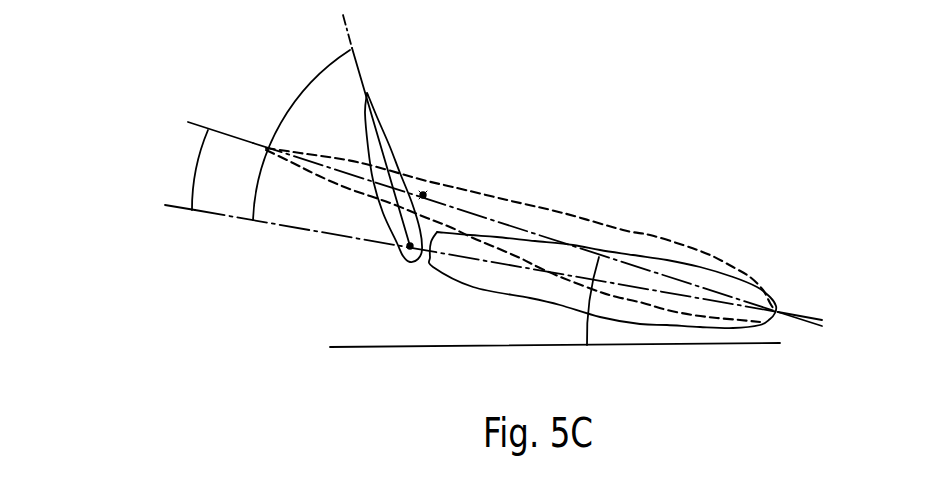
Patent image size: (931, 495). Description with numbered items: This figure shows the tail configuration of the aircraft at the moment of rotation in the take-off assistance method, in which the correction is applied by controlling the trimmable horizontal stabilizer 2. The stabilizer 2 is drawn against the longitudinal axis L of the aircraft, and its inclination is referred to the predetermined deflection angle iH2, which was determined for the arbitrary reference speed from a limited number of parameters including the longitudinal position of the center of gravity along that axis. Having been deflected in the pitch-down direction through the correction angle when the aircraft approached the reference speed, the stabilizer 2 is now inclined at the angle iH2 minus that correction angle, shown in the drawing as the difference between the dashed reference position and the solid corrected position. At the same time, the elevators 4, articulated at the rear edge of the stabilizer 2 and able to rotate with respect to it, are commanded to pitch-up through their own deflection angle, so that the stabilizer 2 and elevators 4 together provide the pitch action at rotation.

The trimmable horizontal stabilizer 2 is at (575, 262).
The elevators 4 is at (388, 142).
The longitudinal axis L is at (558, 364).
The predetermined deflection angle of the trimmable horizontal stabilizer iH2 is at (566, 301).